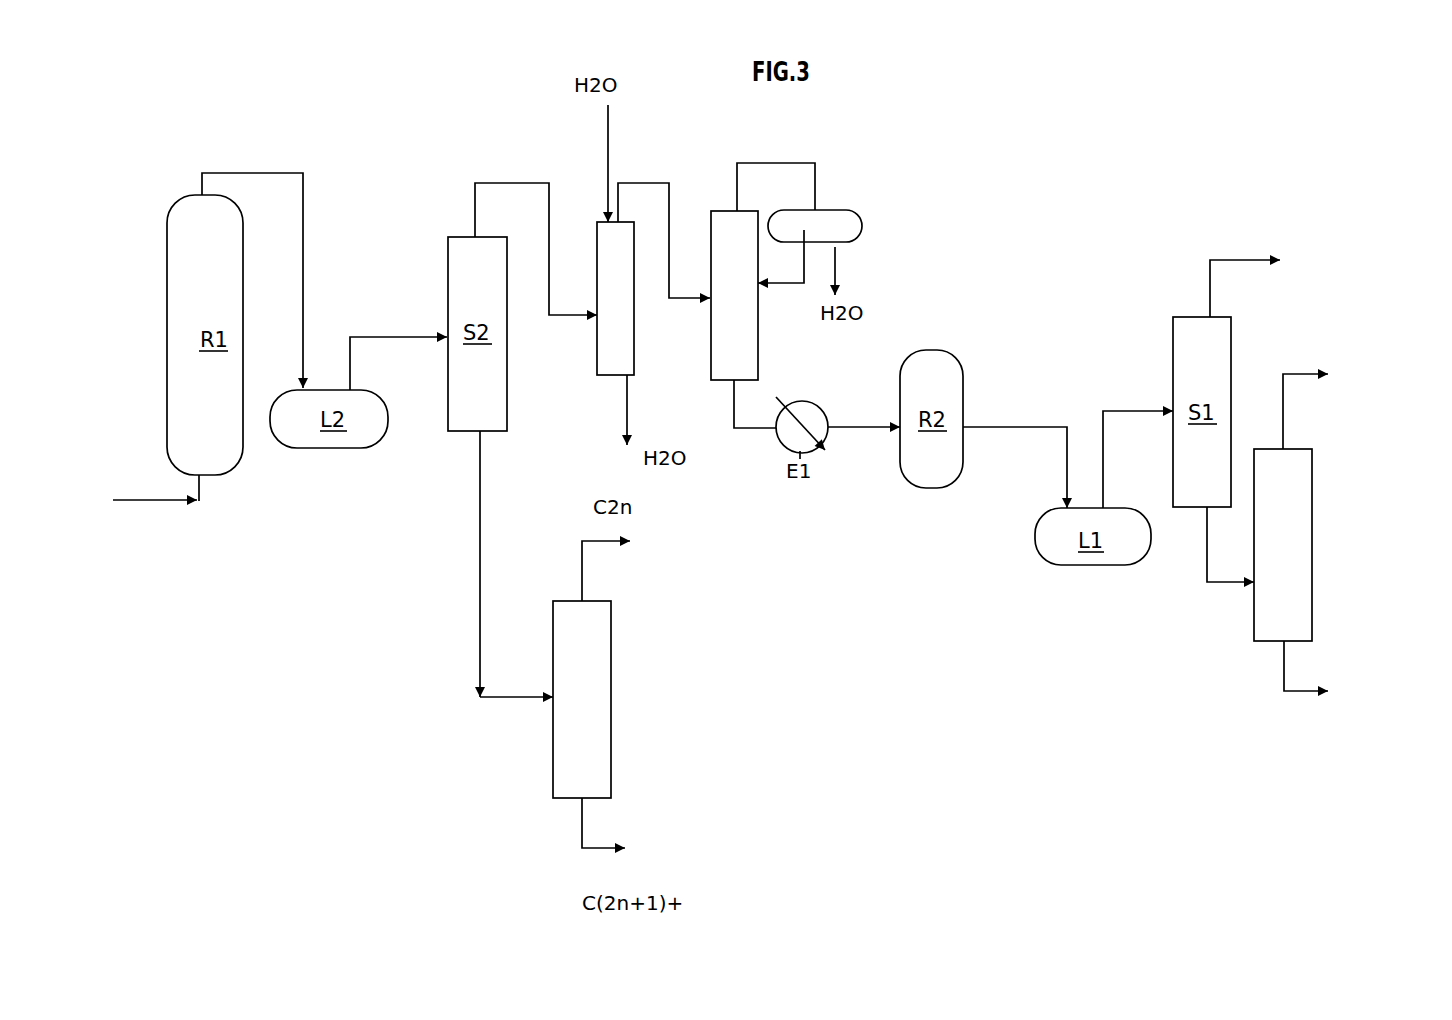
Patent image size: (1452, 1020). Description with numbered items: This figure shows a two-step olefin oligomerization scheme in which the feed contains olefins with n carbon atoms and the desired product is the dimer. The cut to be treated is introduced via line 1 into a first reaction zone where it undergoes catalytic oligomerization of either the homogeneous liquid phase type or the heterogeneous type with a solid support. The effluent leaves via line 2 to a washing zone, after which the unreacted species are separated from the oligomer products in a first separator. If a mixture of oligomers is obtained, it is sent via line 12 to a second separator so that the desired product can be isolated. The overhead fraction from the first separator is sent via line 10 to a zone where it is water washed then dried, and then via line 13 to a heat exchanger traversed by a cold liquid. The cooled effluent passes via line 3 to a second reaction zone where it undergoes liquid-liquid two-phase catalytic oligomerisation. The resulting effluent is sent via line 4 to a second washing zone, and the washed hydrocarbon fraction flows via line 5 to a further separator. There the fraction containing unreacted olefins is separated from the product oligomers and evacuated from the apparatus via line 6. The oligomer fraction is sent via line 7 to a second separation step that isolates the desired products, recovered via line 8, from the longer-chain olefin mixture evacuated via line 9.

The line 1 is at (146, 504).
The line 2 is at (276, 173).
The line 3 is at (855, 427).
The line 4 is at (1012, 427).
The line 5 is at (1133, 411).
The line 6 is at (1224, 260).
The line 7 is at (1207, 570).
The line 8 is at (1290, 374).
The line 9 is at (1284, 692).
The line 10 is at (539, 183).
The line 12 is at (481, 590).
The line 13 is at (768, 428).